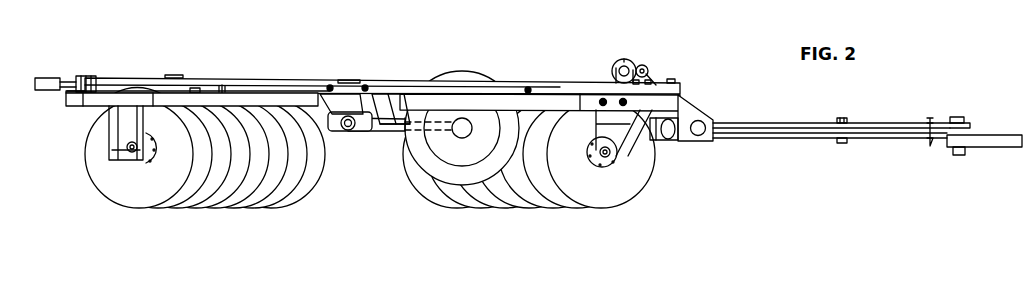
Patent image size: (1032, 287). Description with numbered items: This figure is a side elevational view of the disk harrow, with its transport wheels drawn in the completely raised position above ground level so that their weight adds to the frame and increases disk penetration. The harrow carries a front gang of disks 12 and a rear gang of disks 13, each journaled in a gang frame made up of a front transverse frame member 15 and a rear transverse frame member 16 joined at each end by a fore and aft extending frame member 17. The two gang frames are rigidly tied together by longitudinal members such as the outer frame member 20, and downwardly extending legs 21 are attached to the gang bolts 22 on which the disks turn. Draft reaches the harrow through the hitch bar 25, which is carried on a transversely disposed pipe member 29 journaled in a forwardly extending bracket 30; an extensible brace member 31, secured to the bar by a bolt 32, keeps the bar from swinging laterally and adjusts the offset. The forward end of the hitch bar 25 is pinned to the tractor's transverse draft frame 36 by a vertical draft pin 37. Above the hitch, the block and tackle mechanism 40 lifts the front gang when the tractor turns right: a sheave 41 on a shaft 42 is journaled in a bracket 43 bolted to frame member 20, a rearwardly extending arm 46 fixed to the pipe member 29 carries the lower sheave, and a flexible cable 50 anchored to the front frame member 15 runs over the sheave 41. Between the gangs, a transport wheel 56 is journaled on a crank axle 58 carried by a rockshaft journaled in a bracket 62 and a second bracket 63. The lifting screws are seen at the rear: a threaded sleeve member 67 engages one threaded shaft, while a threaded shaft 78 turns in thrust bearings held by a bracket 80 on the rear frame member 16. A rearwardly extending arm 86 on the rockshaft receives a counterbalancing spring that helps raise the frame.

The front gang of disks 12 is at (660, 186).
The rear gang of disks 13 is at (103, 175).
The front transverse frame member 15 is at (273, 102).
The rear transverse frame member 16 is at (545, 102).
The fore and aft extending frame member 17 is at (118, 102).
The longitudinal frame member 20 is at (391, 88).
The downwardly extending leg 21 is at (143, 115).
The gang bolt 22 is at (127, 146).
The hitch bar 25 is at (867, 128).
The pipe member 29 is at (704, 124).
The bracket 30 is at (698, 108).
The extensible brace member 31 is at (795, 123).
The bolt 32 is at (845, 120).
The transverse draft frame 36 is at (985, 138).
The draft pin 37 is at (962, 118).
The block and tackle mechanism 40 is at (620, 45).
The sheave 41 is at (626, 59).
The shaft 42 is at (641, 65).
The bracket 43 is at (650, 74).
The rearwardly extending arm 46 is at (657, 141).
The flexible cable 50 is at (612, 78).
The transport wheel 56 is at (463, 72).
The crank axle 58 is at (371, 126).
The bracket 62 is at (374, 105).
The bracket 63 is at (347, 102).
The sleeve member 67 is at (253, 80).
The threaded shaft 78 is at (63, 80).
The bracket 80 is at (88, 75).
The arm 86 is at (394, 110).